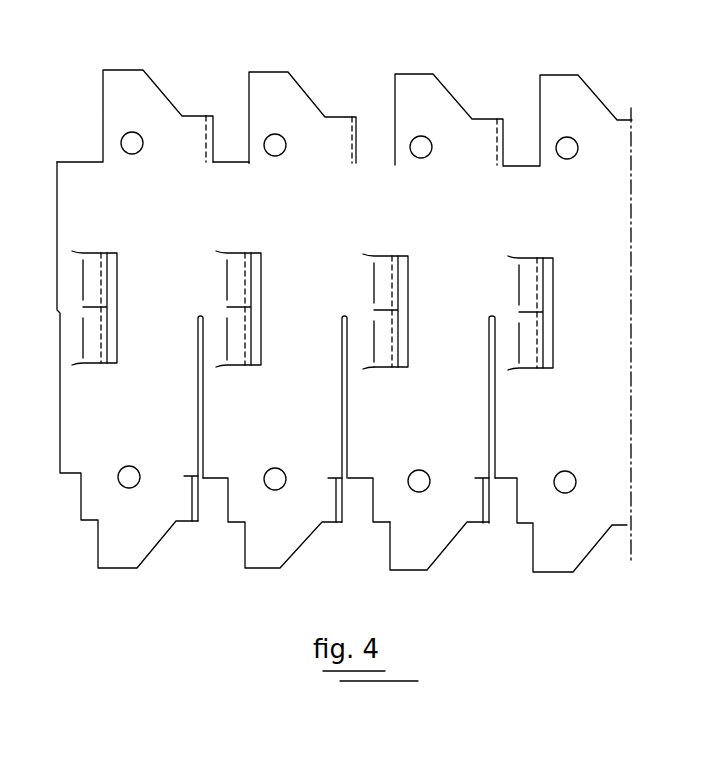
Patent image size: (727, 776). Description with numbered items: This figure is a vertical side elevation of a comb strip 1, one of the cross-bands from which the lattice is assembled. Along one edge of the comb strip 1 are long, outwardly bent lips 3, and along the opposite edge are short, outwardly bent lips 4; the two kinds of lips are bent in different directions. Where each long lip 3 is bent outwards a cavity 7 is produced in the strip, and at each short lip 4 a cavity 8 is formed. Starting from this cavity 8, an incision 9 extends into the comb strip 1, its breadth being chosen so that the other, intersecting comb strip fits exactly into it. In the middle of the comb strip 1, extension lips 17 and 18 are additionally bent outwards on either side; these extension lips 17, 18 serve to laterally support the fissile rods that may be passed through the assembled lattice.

The comb strip 1 is at (344, 321).
The long outwardly bent lip 3 is at (357, 131).
The short outwardly bent lip 4 is at (199, 502).
The cavity 7 is at (234, 144).
The cavity 8 is at (350, 514).
The incision 9 is at (198, 413).
The extension lip 17 is at (378, 291).
The extension lip 18 is at (383, 353).